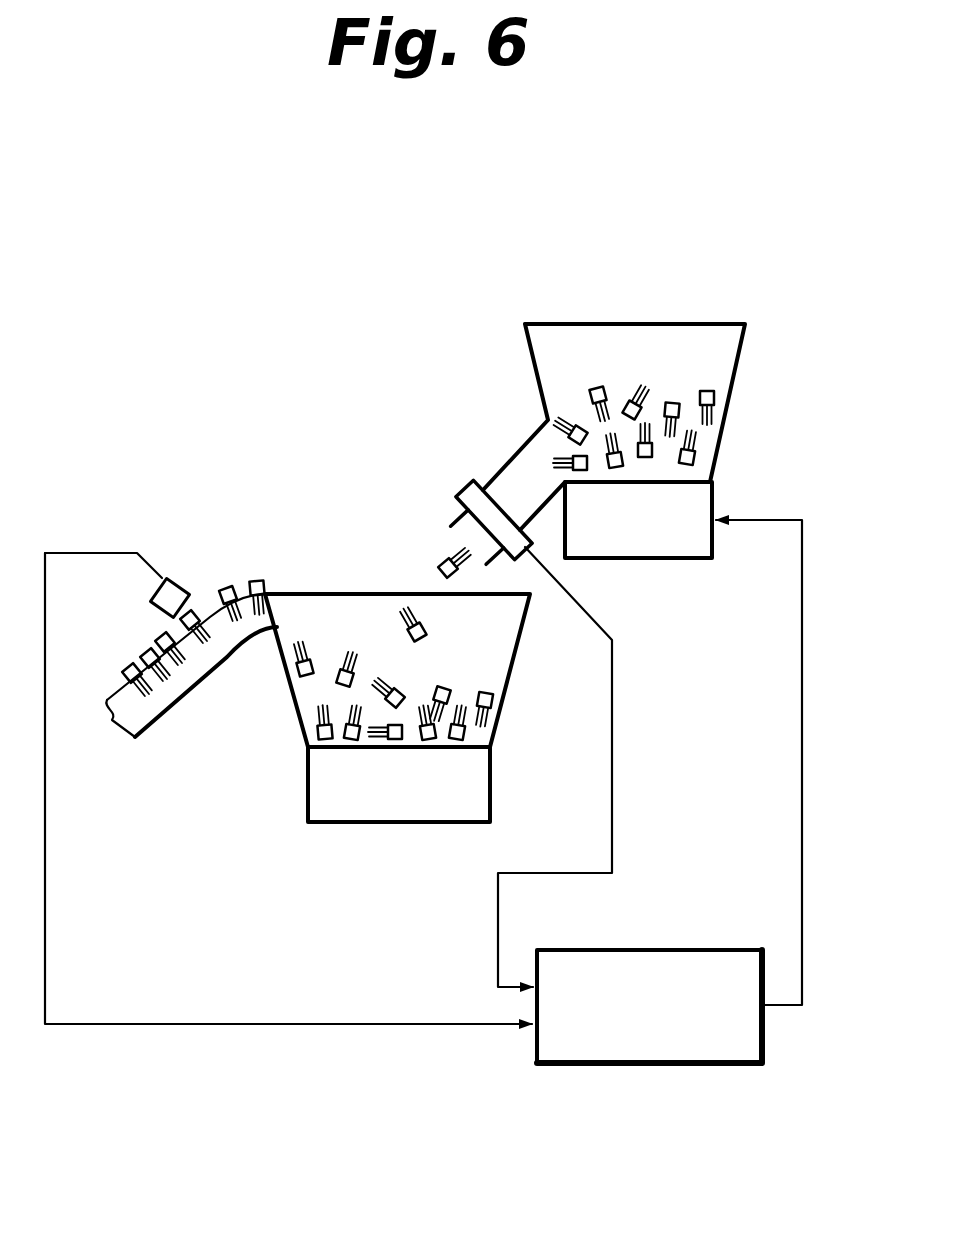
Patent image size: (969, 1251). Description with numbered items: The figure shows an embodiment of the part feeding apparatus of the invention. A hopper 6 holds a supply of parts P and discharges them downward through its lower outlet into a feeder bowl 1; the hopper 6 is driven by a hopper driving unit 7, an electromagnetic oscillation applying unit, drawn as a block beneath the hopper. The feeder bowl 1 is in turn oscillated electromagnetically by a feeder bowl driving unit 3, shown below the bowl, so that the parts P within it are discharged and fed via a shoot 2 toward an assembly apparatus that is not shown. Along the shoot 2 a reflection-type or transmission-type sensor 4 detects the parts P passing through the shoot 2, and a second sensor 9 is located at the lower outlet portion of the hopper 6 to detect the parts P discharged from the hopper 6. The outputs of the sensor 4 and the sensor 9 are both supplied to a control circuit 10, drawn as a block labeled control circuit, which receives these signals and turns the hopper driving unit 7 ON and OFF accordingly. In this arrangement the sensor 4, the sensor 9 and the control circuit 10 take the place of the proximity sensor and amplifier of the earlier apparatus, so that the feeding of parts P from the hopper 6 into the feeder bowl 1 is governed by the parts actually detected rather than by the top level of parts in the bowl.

The feeder bowl 1 is at (335, 607).
The shoot 2 is at (143, 714).
The feeder bowl driving unit 3 is at (350, 822).
The sensor 4 is at (177, 585).
The hopper 6 is at (735, 353).
The hopper driving unit 7 is at (668, 560).
The sensor 9 is at (468, 488).
The control circuit 10 is at (662, 950).
The parts P is at (632, 400).